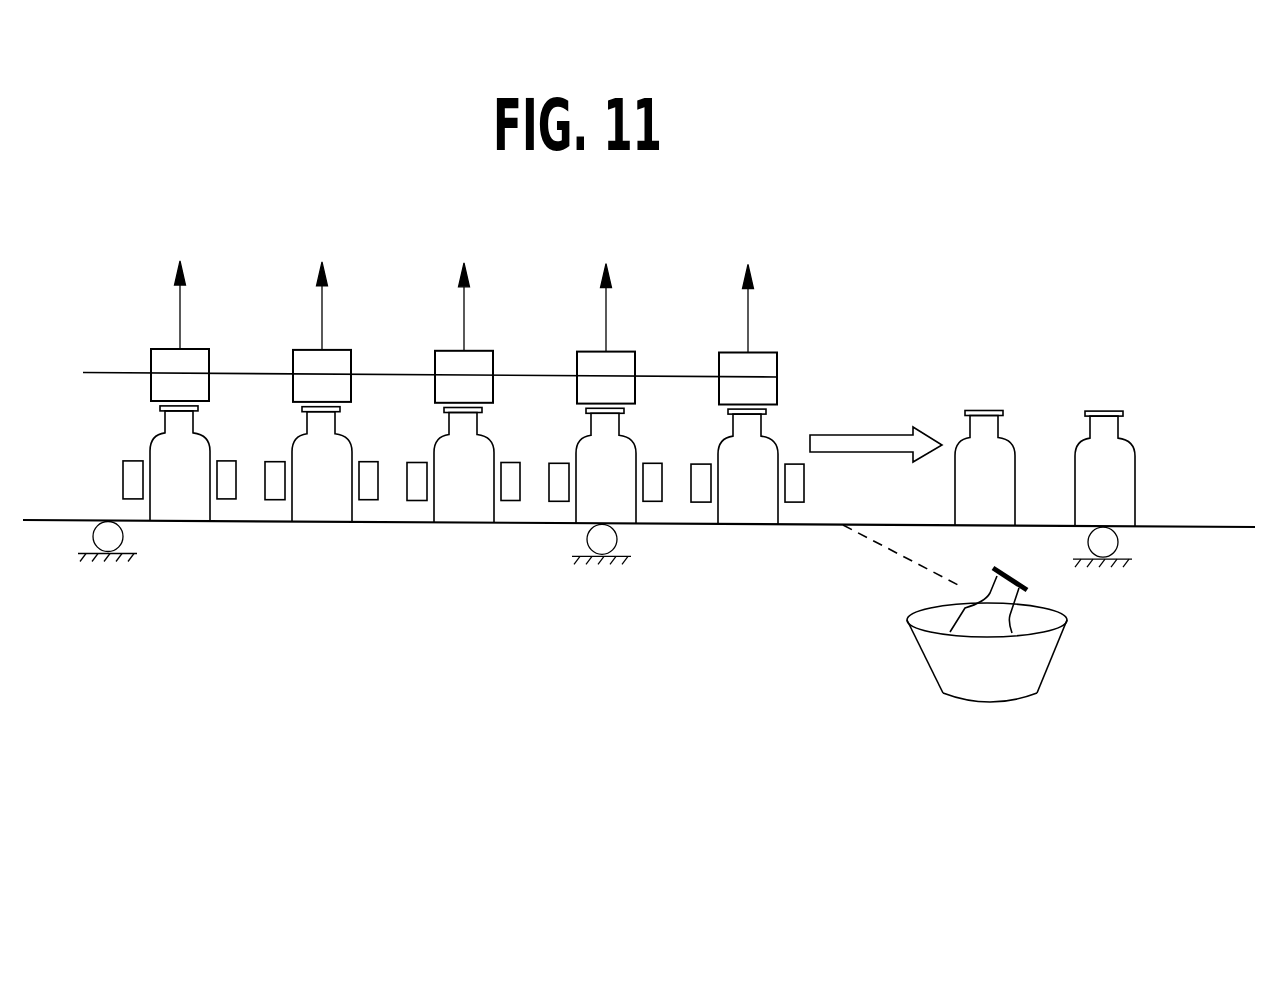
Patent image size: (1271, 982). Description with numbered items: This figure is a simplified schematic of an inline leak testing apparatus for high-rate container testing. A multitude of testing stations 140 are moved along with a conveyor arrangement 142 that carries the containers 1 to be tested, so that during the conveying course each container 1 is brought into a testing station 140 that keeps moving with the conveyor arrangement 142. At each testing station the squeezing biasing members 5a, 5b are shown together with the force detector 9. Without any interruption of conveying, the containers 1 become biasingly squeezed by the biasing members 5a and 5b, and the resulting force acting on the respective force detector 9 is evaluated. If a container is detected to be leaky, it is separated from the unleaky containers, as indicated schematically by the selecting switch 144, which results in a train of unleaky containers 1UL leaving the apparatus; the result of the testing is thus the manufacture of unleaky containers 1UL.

The container 1 is at (182, 505).
The unleaky container 1UL is at (1010, 452).
The squeezing biasing member 5a is at (122, 478).
The squeezing biasing member 5b is at (236, 483).
The force detector 9 is at (150, 354).
The testing station 140 is at (197, 345).
The conveyor arrangement 142 is at (775, 428).
The selecting switch 144 is at (893, 555).